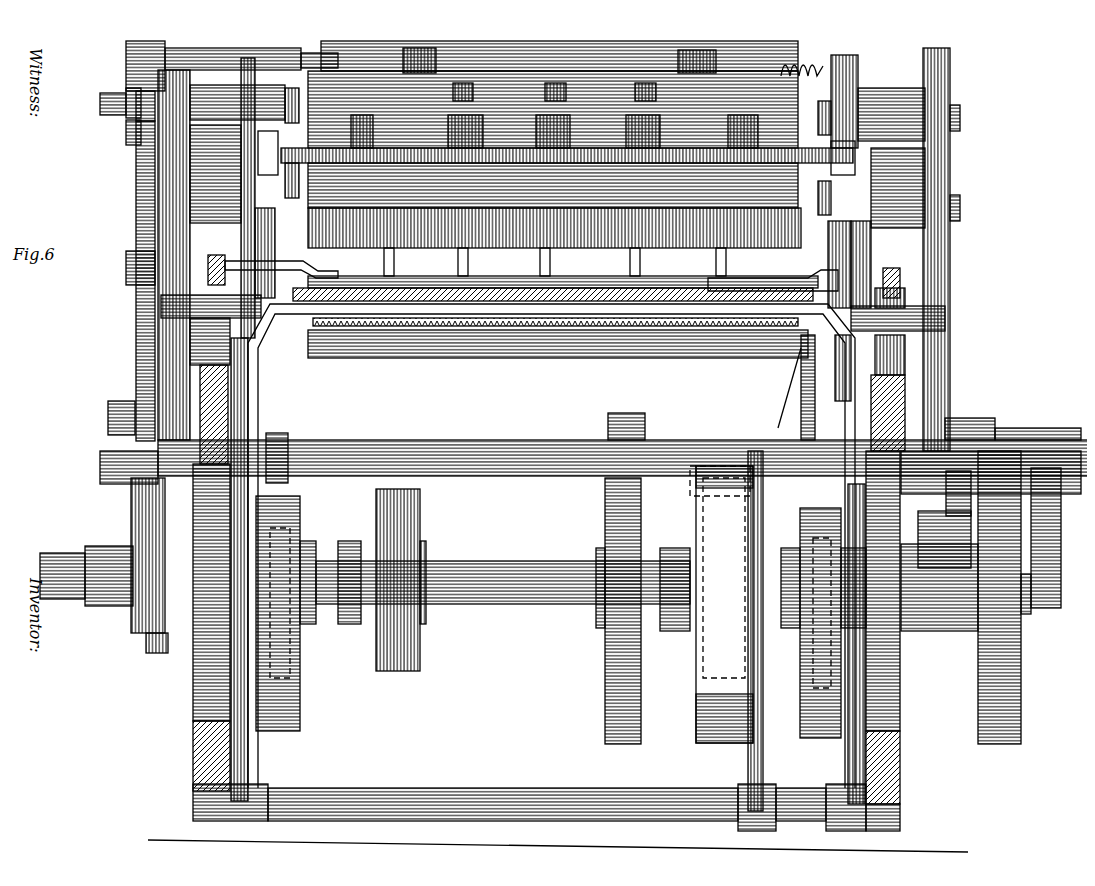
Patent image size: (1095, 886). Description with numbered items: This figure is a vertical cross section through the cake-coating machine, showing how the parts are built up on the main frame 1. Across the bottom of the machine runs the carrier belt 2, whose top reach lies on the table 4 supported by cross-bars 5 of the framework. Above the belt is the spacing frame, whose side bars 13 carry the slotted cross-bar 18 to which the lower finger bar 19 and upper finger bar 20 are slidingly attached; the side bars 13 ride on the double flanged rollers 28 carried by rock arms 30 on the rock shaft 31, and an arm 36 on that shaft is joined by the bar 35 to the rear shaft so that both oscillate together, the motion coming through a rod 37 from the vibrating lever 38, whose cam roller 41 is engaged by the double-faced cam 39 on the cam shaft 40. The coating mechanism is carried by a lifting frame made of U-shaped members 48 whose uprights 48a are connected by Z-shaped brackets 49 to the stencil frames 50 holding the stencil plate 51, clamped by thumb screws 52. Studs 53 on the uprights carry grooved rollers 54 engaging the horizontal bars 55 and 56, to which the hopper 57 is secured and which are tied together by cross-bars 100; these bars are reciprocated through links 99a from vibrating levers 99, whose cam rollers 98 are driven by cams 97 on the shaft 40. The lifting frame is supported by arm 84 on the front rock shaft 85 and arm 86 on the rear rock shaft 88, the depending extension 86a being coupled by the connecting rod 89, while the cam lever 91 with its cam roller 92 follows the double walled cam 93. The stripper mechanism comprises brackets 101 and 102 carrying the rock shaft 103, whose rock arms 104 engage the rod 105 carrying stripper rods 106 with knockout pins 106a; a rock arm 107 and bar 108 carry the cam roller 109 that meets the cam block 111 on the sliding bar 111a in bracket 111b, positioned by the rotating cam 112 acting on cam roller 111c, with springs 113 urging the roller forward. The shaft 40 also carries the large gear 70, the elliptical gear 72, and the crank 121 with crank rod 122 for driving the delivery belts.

The main frame 1 is at (200, 736).
The carrier belt 2 is at (523, 300).
The table 4 is at (450, 295).
The cross-bars 5 is at (252, 340).
The side bars or rails 13 is at (210, 250).
The slotted cross-bar 18 is at (531, 276).
The lower finger bar 19 is at (350, 290).
The upper finger bar 20 is at (345, 292).
The front double flanged rollers 28 is at (210, 300).
The rock arms 30 is at (262, 340).
The front rock shaft 31 is at (706, 360).
The bar 35 is at (765, 455).
The arm 36 is at (795, 392).
The rod 37 is at (712, 535).
The vibrating lever 38 is at (752, 762).
The double-faced cam 39 is at (685, 725).
The cam shaft 40 is at (484, 588).
The cam roller 41 is at (705, 600).
The U-shaped frame members 48 is at (130, 208).
The uprights 48a is at (945, 85).
The Z-shaped web or bracket members 49 is at (262, 245).
The stencil frames 50 is at (490, 240).
The stencil plate 51 is at (698, 262).
The thumb screws 52 is at (684, 272).
The studs 53 is at (240, 80).
The grooved rollers 54 is at (292, 95).
The horizontal bar 55 is at (850, 142).
The horizontal bar 56 is at (272, 148).
The hopper 57 is at (620, 42).
The large gear 70 is at (605, 705).
The elliptical gear 72 is at (402, 650).
The horizontal arm 84 is at (105, 415).
The front rock shaft 85 is at (270, 440).
The horizontal arm 86 is at (962, 425).
The depending extension 86a is at (1015, 432).
The rear rock shaft 88 is at (622, 447).
The connecting rod 89 is at (925, 515).
The cam lever 91 is at (1042, 545).
The cam roller 92 is at (1020, 605).
The double walled cam 93 is at (1005, 660).
The cams 97 is at (272, 722).
The cam rollers 98 is at (272, 580).
The vibrating levers 99 is at (240, 185).
The links 99a is at (225, 165).
The cross-bars 100 is at (505, 137).
The upright bracket 101 is at (258, 102).
The upright bracket 102 is at (852, 80).
The rock shaft 103 is at (305, 42).
The rock arms 104 is at (440, 112).
The rod 105 is at (510, 88).
The stripper rods 106 is at (470, 180).
The knockout pins 106a is at (563, 274).
The rock arm 107 is at (136, 75).
The bar 108 is at (105, 107).
The cam roller 109 is at (118, 130).
The cam block 111 is at (126, 44).
The bar 111a is at (135, 195).
The bracket 111b is at (125, 262).
The cam roller 111c is at (150, 470).
The rotating cam 112 is at (150, 645).
The springs 113 is at (812, 50).
The crank 121 is at (100, 590).
The crank rod 122 is at (70, 550).